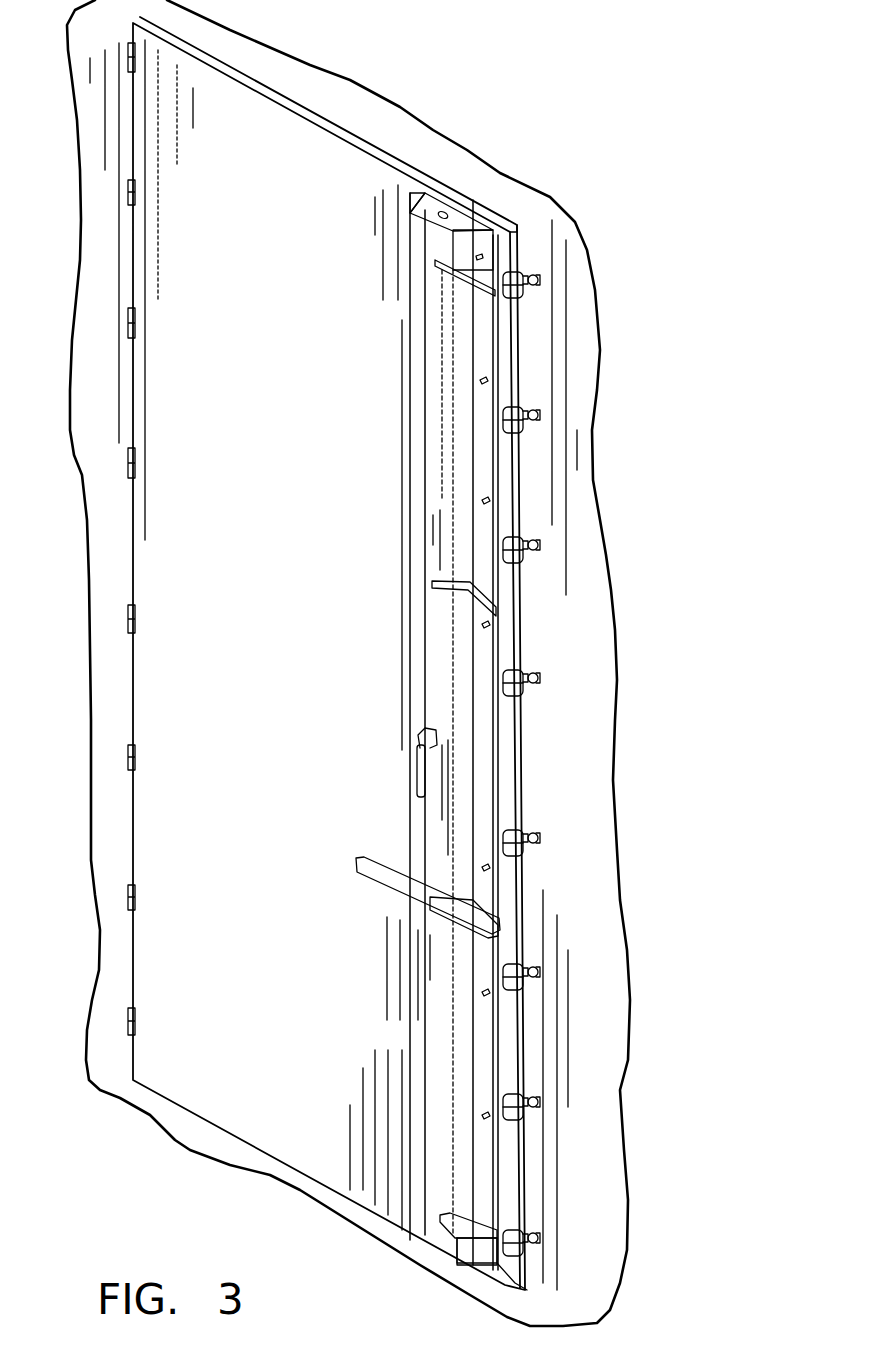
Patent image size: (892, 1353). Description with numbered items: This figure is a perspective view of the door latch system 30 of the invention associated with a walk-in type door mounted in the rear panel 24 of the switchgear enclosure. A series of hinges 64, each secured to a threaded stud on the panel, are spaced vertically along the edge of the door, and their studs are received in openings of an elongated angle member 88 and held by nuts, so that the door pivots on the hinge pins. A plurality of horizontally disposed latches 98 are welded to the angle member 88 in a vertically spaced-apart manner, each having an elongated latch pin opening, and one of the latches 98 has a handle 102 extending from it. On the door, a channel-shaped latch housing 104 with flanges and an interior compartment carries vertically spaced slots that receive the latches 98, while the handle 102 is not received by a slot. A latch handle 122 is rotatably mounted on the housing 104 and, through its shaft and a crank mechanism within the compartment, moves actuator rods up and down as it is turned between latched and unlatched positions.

The rear panel 24 is at (573, 857).
The hinge 64 is at (388, 653).
The elongated angle member 88 is at (512, 253).
The door latch system 30 is at (446, 236).
The channel-shaped latch housing 104 is at (416, 596).
The latch handle 122 is at (418, 772).
The handle 102 is at (365, 877).
The latch 98 is at (457, 921).